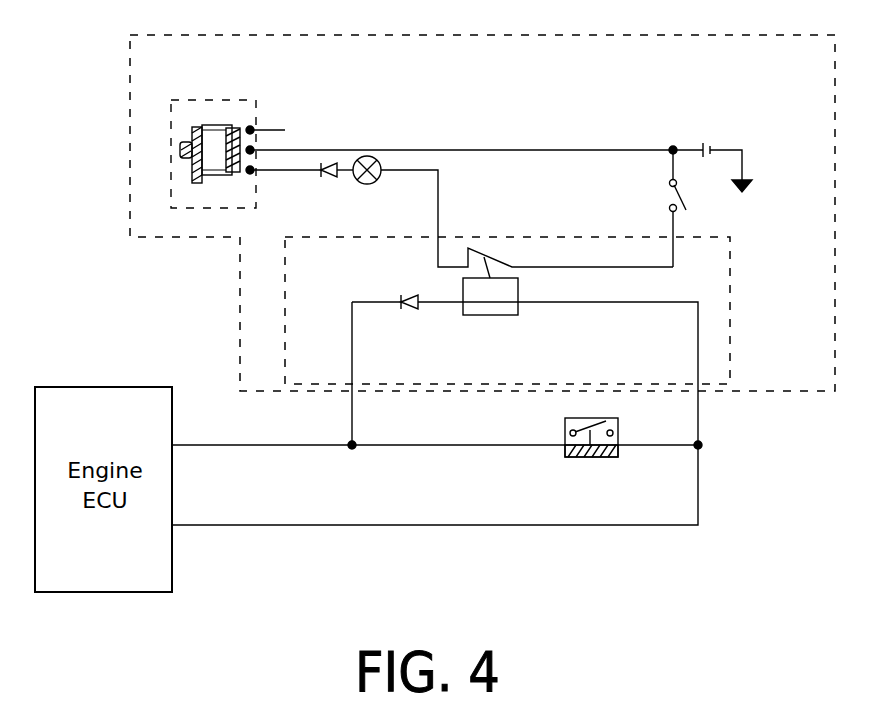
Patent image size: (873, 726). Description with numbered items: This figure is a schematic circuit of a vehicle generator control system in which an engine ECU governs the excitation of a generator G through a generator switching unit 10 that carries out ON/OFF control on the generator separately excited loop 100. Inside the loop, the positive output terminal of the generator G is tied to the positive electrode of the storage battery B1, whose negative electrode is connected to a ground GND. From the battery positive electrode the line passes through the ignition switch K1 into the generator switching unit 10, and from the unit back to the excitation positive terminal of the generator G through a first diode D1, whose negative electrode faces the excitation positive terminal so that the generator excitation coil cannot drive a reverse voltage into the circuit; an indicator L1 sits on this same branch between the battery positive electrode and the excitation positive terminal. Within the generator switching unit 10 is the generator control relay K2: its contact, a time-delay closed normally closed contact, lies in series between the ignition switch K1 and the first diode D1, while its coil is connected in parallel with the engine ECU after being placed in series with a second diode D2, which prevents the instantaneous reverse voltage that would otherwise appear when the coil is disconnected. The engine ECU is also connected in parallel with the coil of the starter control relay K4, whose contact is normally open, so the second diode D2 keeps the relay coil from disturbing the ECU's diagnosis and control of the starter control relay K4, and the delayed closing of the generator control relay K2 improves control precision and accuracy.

The generator separately excited loop 100 is at (482, 213).
The generator switching unit 10 is at (451, 381).
The generator G is at (225, 154).
The first diode D1 is at (329, 184).
The indicator L1 is at (367, 180).
The storage battery B1 is at (707, 138).
The ignition switch K1 is at (666, 208).
The ground GND is at (747, 198).
The generator control relay K2 is at (490, 312).
The second diode D2 is at (409, 318).
The starter control relay K4 is at (591, 425).